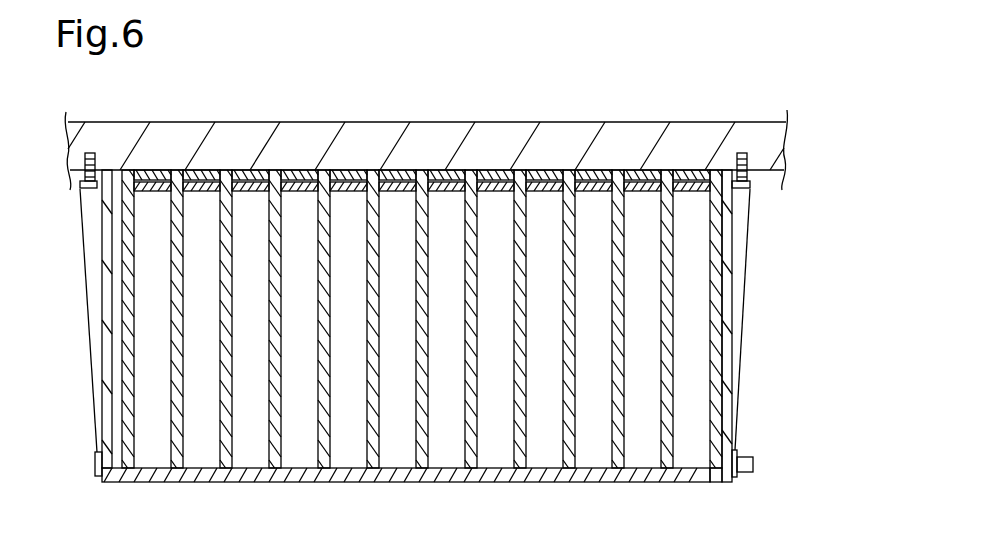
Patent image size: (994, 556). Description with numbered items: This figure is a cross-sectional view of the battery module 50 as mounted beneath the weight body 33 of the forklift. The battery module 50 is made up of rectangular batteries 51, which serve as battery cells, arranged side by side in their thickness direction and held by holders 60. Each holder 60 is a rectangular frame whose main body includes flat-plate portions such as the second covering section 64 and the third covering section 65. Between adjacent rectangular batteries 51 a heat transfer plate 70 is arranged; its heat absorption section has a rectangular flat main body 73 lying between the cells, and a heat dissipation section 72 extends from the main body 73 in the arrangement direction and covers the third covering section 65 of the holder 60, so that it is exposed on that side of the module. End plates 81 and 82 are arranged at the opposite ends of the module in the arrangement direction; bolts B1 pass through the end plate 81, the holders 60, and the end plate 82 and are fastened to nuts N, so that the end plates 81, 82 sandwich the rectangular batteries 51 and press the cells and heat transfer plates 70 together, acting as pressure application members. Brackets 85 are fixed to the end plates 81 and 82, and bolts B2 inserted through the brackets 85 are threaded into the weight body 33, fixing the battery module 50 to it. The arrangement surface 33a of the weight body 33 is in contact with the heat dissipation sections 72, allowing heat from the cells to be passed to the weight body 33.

The weight body 33 is at (464, 131).
The arrangement surface 33a is at (763, 171).
The battery module 50 is at (59, 484).
The rectangular battery 51 is at (247, 453).
The holder 60 is at (190, 483).
The second covering section 64 is at (414, 483).
The third covering section 65 is at (396, 192).
The heat transfer plate 70 is at (320, 453).
The heat dissipation section 72 is at (346, 176).
The main body 73 is at (283, 256).
The end plate 81 is at (120, 469).
The end plate 82 is at (715, 482).
The bracket 85 is at (87, 300).
The bolt B1 is at (93, 462).
The bolt B2 is at (90, 189).
The nut N is at (737, 454).